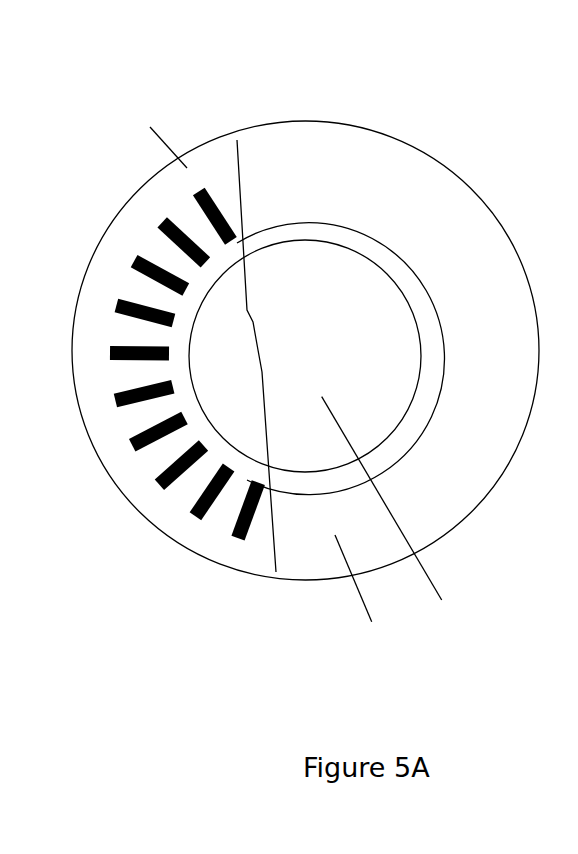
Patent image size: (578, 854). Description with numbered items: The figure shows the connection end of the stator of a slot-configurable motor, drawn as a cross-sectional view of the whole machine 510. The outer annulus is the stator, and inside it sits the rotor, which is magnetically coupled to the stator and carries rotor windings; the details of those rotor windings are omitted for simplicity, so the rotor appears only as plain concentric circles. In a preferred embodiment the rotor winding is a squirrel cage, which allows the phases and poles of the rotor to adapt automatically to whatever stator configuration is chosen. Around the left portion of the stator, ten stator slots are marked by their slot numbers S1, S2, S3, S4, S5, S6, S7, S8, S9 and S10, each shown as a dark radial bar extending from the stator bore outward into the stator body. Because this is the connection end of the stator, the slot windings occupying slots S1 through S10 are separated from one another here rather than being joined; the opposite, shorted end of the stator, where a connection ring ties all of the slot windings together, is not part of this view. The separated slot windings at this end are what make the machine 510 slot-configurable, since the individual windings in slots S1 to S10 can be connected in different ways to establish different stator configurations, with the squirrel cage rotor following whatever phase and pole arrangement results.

The electric machine cross-section (stator with slots and rotor) 510 is at (311, 339).
The stator slot 1 S1 is at (208, 207).
The stator slot 2 S2 is at (173, 235).
The stator slot 3 S3 is at (148, 270).
The stator slot 4 S4 is at (131, 309).
The stator slot 5 S5 is at (125, 353).
The stator slot 6 S6 is at (131, 401).
The stator slot 7 S7 is at (144, 441).
The stator slot 8 S8 is at (171, 478).
The stator slot 9 S9 is at (204, 505).
The stator slot 10 S10 is at (242, 524).